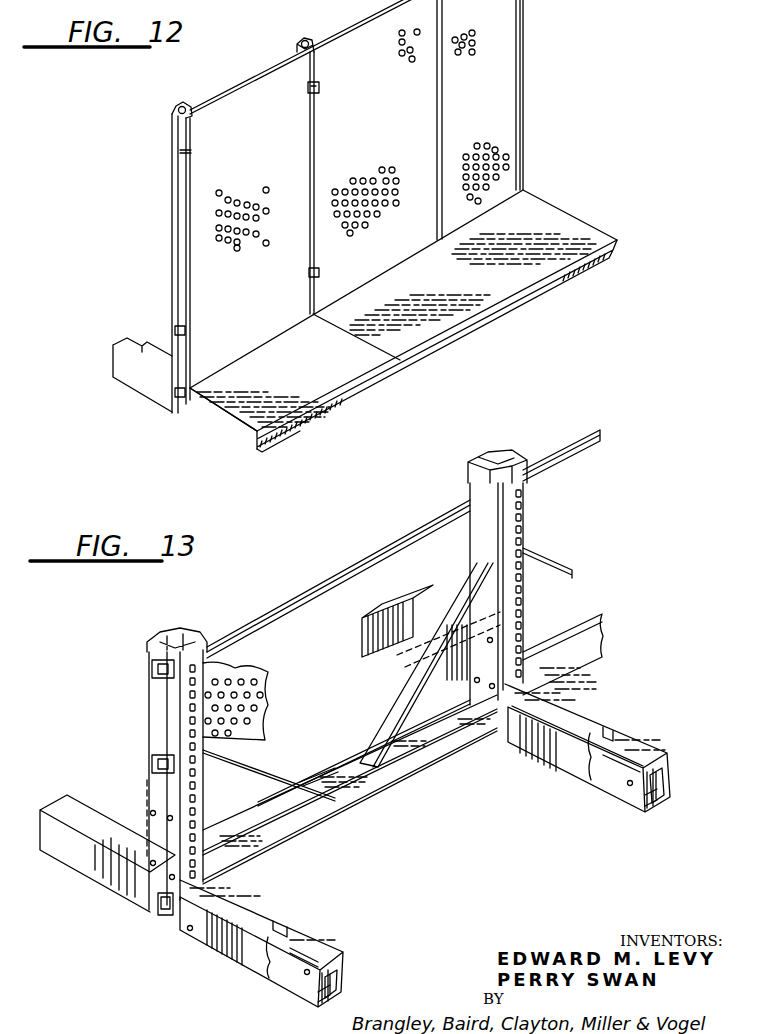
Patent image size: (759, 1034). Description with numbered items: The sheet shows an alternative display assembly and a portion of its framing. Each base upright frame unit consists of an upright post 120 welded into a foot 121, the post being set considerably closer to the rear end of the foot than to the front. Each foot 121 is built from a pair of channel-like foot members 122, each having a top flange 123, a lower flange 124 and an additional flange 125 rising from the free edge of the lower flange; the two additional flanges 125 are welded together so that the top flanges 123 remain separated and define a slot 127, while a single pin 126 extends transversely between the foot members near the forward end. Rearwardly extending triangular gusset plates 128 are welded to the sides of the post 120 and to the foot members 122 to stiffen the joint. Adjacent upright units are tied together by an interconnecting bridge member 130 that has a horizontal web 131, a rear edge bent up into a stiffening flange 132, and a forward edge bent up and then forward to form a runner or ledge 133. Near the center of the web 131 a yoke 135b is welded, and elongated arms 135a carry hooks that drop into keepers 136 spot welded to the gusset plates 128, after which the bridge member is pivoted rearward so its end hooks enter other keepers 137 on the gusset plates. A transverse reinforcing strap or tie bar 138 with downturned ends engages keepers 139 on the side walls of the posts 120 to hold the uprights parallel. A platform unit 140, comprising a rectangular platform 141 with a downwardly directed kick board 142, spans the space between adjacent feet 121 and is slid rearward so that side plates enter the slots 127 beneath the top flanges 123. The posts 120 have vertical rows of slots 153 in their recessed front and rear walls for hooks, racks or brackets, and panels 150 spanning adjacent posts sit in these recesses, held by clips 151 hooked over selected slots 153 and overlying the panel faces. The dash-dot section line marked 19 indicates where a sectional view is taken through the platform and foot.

In FIG. 12, the section line 19- 19 is at (151, 253).
In FIG. 12, the platform unit 140 is at (366, 407).
In FIG. 12, the platform 141 is at (536, 226).
In FIG. 12, the kick plate or board 142 is at (272, 448).
In FIG. 12, the panel 150 is at (280, 130).
In FIG. 12, the clip 151 is at (318, 90).
In FIG. 13, the upright post 120 is at (185, 640).
In FIG. 13, the foot 121 is at (192, 942).
In FIG. 13, the foot member 122 is at (572, 712).
In FIG. 13, the top flange 123 is at (258, 938).
In FIG. 13, the lower flange 124 is at (344, 990).
In FIG. 13, the additional flange 125 is at (313, 993).
In FIG. 13, the pin 126 is at (627, 789).
In FIG. 13, the slot 127 is at (264, 923).
In FIG. 13, the gusset plate 128 is at (77, 857).
In FIG. 13, the interconnecting bridge member 130 is at (440, 757).
In FIG. 13, the horizontal web 131 is at (290, 813).
In FIG. 13, the stiffening flange 132 is at (259, 804).
In FIG. 13, the runner or ledge 133 is at (393, 773).
In FIG. 13, the elongated arm 135a is at (260, 770).
In FIG. 13, the yoke 135b is at (320, 777).
In FIG. 13, the keeper 136 is at (158, 768).
In FIG. 13, the keeper 137 is at (164, 916).
In FIG. 13, the reinforcing strap or tie bar 138 is at (395, 548).
In FIG. 13, the keeper 139 is at (158, 674).
In FIG. 13, the slot 153 is at (528, 547).